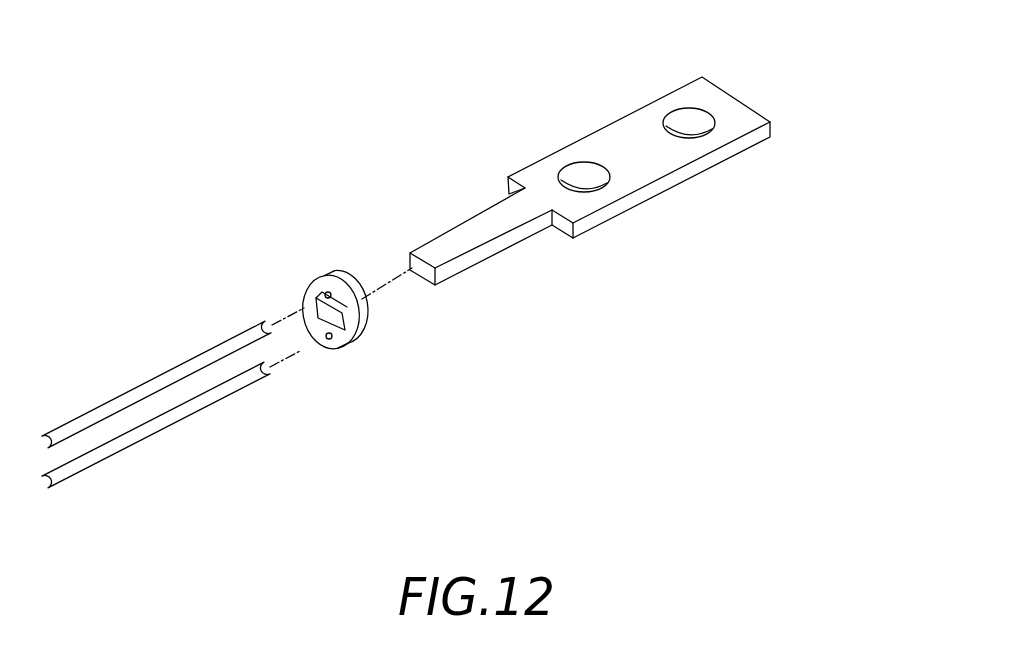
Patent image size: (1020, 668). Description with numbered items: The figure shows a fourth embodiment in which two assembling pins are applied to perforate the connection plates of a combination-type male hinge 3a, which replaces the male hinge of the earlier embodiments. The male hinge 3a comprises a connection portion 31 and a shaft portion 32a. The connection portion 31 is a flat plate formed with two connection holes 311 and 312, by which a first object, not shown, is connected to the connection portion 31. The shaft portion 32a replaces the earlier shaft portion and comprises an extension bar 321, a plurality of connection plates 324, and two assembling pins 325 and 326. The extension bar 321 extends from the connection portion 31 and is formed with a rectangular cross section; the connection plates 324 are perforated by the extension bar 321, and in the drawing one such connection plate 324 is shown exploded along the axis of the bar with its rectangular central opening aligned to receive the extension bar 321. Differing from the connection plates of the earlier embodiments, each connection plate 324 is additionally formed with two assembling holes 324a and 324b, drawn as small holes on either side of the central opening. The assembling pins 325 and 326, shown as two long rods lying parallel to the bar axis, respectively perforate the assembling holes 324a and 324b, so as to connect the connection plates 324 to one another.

The combination-type male hinge 3a is at (856, 97).
The connection portion 31 is at (600, 181).
The connection hole 311 is at (603, 186).
The connection hole 312 is at (705, 134).
The extension bar 321 is at (490, 232).
The shaft portion 32a is at (313, 370).
The connection plate 324 is at (351, 318).
The assembling hole 324a is at (327, 292).
The assembling hole 324b is at (329, 339).
The assembling pin 325 is at (118, 401).
The assembling pin 326 is at (113, 447).